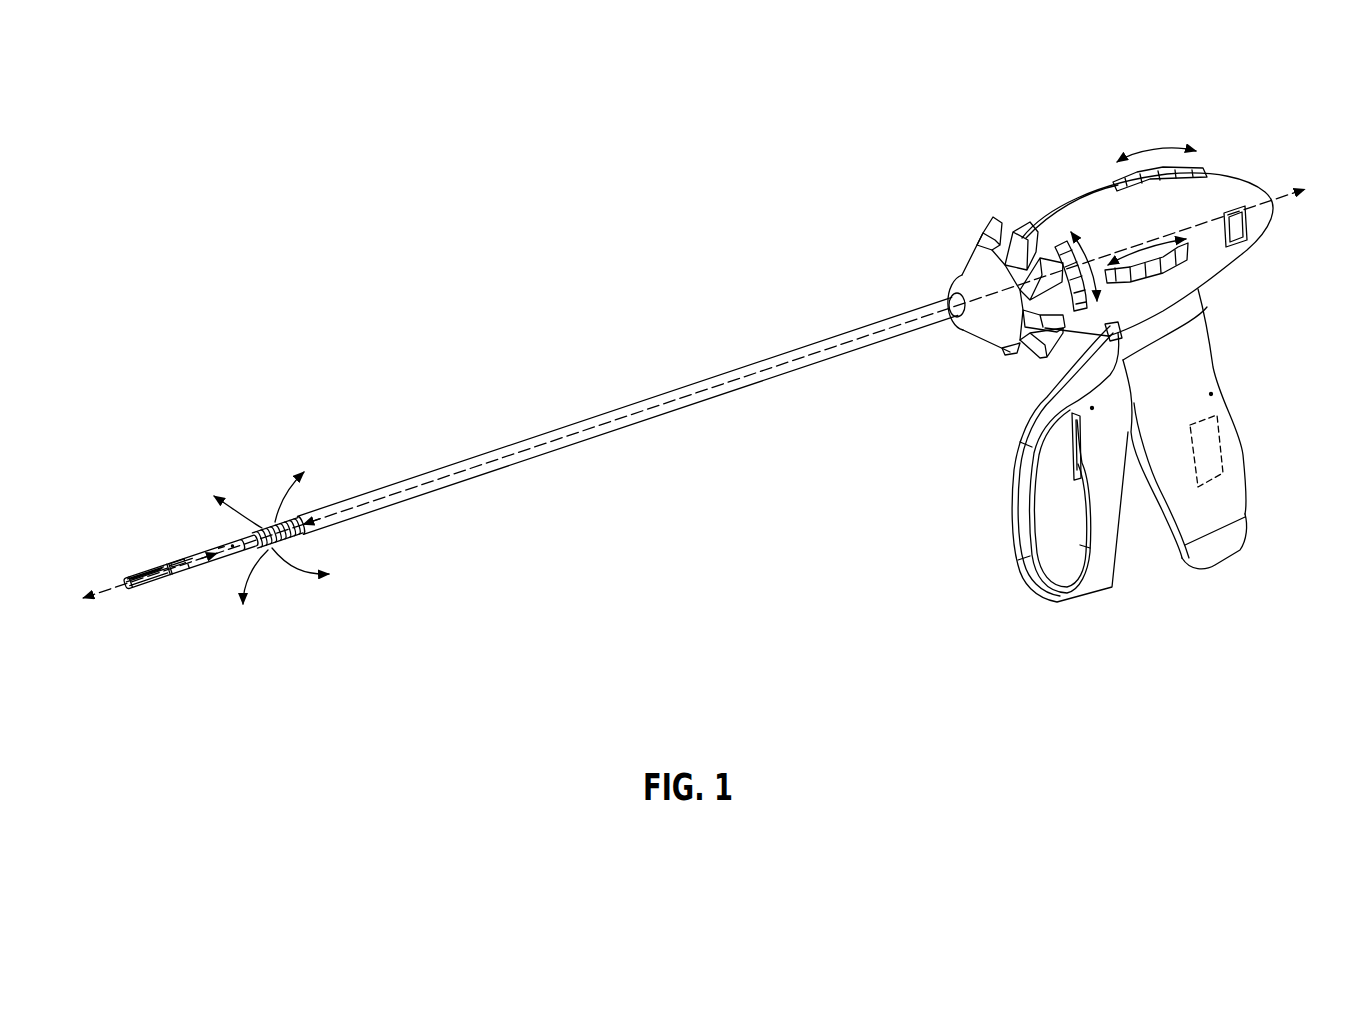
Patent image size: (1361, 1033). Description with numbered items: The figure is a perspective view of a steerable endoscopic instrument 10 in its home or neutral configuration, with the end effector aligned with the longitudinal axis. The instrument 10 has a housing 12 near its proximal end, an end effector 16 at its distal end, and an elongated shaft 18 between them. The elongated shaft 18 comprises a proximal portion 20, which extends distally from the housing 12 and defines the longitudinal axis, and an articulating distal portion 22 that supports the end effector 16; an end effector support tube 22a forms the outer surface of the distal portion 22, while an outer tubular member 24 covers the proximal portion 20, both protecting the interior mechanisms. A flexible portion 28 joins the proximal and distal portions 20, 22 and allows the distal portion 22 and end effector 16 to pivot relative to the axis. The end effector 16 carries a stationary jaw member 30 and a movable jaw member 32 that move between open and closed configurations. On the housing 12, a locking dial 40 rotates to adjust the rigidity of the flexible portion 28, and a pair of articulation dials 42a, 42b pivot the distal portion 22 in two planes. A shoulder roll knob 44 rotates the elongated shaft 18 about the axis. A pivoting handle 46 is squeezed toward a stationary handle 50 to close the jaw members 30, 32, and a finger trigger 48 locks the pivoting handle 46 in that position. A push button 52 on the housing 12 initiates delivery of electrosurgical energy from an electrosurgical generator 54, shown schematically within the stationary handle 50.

The steerable endoscopic instrument 10 is at (392, 382).
The housing 12 is at (1066, 145).
The end effector 16 is at (147, 577).
The elongated shaft 18 is at (540, 445).
The proximal portion 20 is at (627, 415).
The articulating distal portion 22 is at (214, 554).
The end effector support tube 22a is at (182, 565).
The outer tubular member 24 is at (630, 424).
The flexible portion 28 is at (277, 533).
The stationary jaw member 30 is at (147, 577).
The movable jaw member 32 is at (146, 573).
The locking dial 40 is at (1060, 243).
The articulation dial 42a is at (1195, 177).
The articulation dial 42b is at (1175, 266).
The shoulder roll knob 44 is at (993, 218).
The pivoting handle 46 is at (1105, 587).
The finger trigger 48 is at (1068, 447).
The stationary handle 50 is at (1226, 500).
The push button 52 is at (1243, 225).
The electrosurgical generator 54 is at (1212, 447).